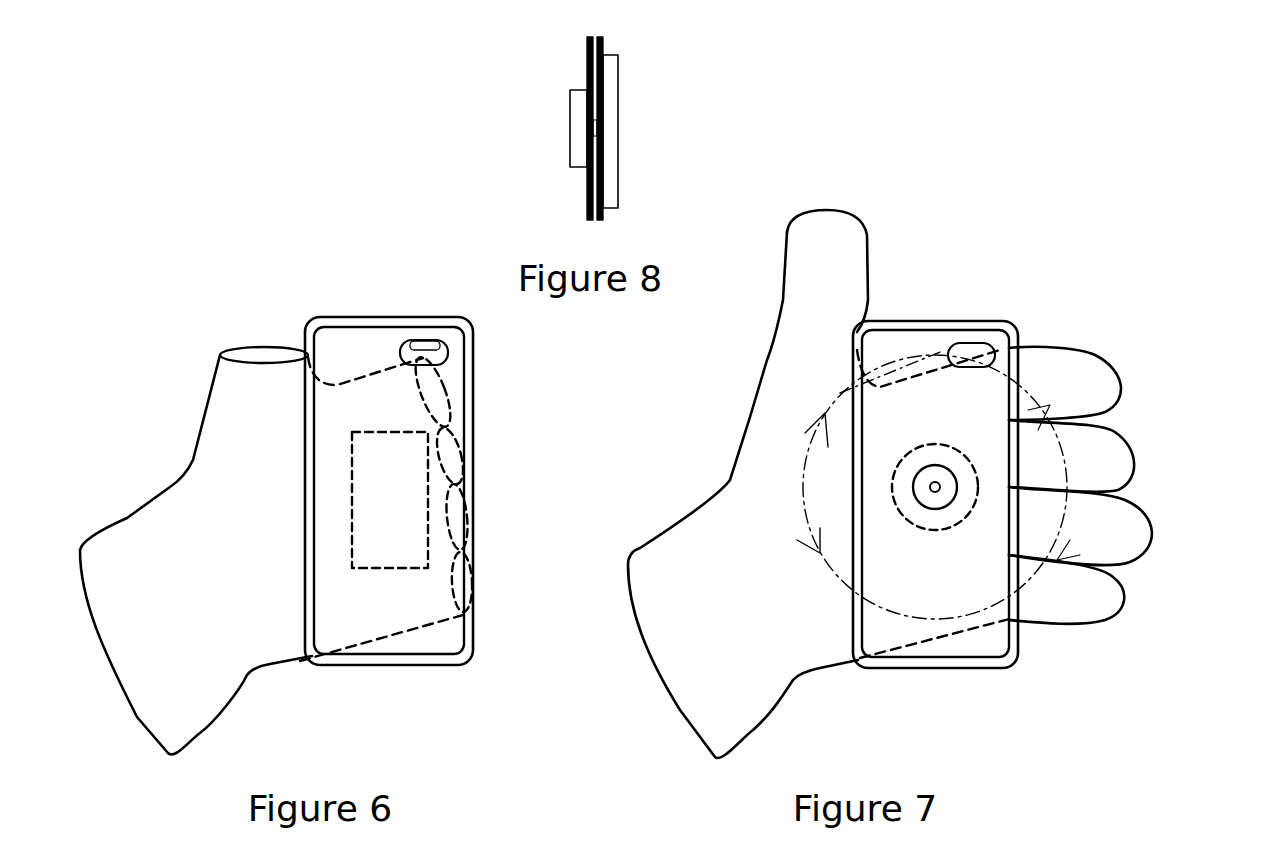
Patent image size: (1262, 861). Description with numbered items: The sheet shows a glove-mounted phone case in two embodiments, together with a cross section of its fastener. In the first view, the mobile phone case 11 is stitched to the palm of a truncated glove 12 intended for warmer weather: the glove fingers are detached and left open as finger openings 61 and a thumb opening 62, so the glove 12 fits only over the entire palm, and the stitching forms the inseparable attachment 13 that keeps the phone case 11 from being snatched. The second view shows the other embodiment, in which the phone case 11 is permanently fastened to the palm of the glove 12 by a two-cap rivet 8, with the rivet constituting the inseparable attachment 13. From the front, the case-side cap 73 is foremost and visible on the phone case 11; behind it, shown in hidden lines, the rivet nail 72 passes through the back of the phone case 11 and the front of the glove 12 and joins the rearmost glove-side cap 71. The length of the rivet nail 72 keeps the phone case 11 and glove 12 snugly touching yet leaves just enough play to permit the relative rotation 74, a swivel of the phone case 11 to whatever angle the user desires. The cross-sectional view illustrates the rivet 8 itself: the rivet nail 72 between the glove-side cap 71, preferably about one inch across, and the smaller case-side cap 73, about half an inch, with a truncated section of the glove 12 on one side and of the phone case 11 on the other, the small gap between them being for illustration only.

In FIG. 8, the two-cap rivet 8 is at (513, 175).
In FIG. 7, the two-cap rivet 8 is at (1213, 570).
In FIG. 8, the mobile phone case 11 is at (587, 50).
In FIG. 6, the mobile phone case 11 is at (357, 347).
In FIG. 7, the mobile phone case 11 is at (903, 352).
In FIG. 8, the glove 12 is at (603, 42).
In FIG. 6, the glove 12 is at (237, 418).
In FIG. 7, the glove 12 is at (785, 420).
In FIG. 6, the inseparable attachment 13 is at (377, 570).
In FIG. 7, the inseparable attachment 13 is at (910, 565).
In FIG. 6, the finger openings 61 is at (460, 583).
In FIG. 6, the thumb opening 62 is at (267, 357).
In FIG. 8, the glove-side cap 71 is at (612, 92).
In FIG. 7, the glove-side cap 71 is at (947, 460).
In FIG. 8, the rivet nail 72 is at (600, 155).
In FIG. 7, the rivet nail 72 is at (938, 495).
In FIG. 8, the case-side cap 73 is at (575, 128).
In FIG. 7, the case-side cap 73 is at (918, 477).
In FIG. 7, the relative rotation 74 is at (805, 512).